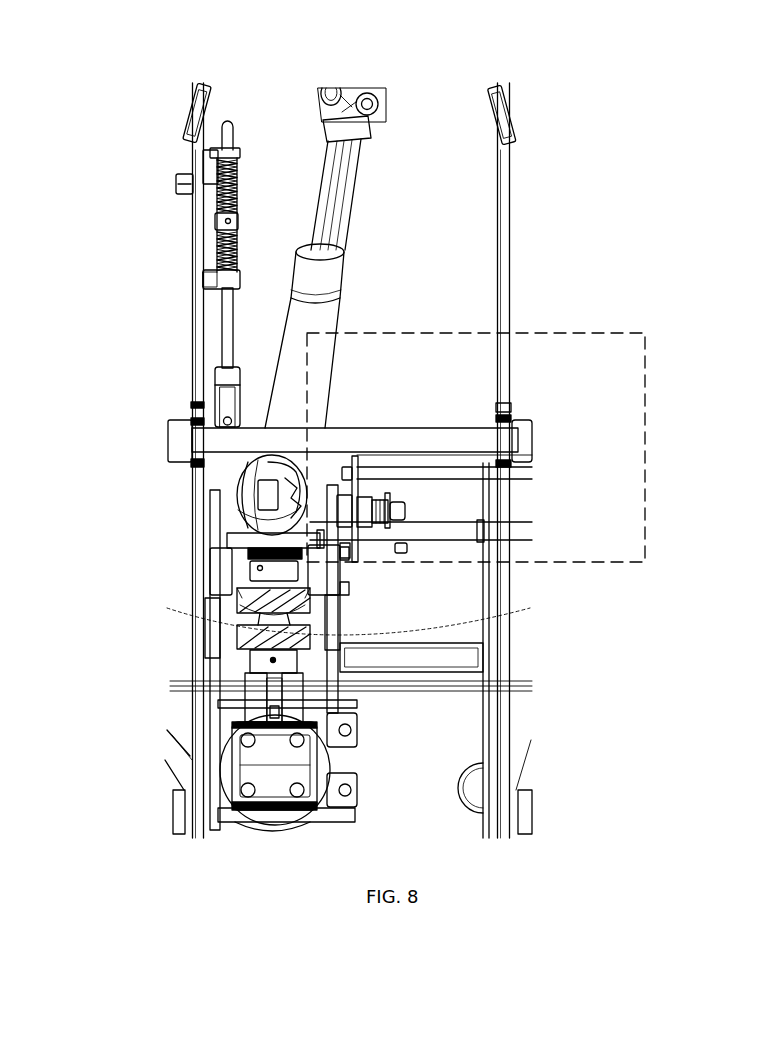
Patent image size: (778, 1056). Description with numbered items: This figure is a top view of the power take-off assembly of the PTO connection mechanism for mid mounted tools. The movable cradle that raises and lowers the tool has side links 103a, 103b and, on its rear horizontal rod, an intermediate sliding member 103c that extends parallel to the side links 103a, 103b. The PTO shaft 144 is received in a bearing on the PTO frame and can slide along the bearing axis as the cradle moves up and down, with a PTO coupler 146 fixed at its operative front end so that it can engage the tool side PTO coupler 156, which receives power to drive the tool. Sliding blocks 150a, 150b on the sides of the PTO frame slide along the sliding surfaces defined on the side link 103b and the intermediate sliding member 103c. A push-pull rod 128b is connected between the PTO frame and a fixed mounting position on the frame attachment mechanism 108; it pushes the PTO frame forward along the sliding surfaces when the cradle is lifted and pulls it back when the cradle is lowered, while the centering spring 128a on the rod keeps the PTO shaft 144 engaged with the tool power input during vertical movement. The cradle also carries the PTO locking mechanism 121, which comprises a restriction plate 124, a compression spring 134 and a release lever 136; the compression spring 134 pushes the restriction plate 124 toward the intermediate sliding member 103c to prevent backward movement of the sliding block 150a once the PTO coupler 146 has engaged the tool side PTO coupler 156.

The side link 103a is at (486, 538).
The side link 103b is at (212, 644).
The intermediate sliding member 103c is at (333, 615).
The frame attachment mechanism 108 is at (190, 365).
The PTO locking mechanism 121 is at (528, 333).
The restriction plate 124 is at (353, 457).
The centering spring 128a is at (218, 252).
The push-pull rod 128b is at (225, 312).
The compression spring 134 is at (383, 497).
The release lever 136 is at (460, 467).
The PTO shaft 144 is at (328, 80).
The PTO coupler 146 is at (263, 588).
The sliding block 150a is at (333, 577).
The sliding block 150b is at (212, 566).
The tool side PTO coupler 156 is at (261, 633).